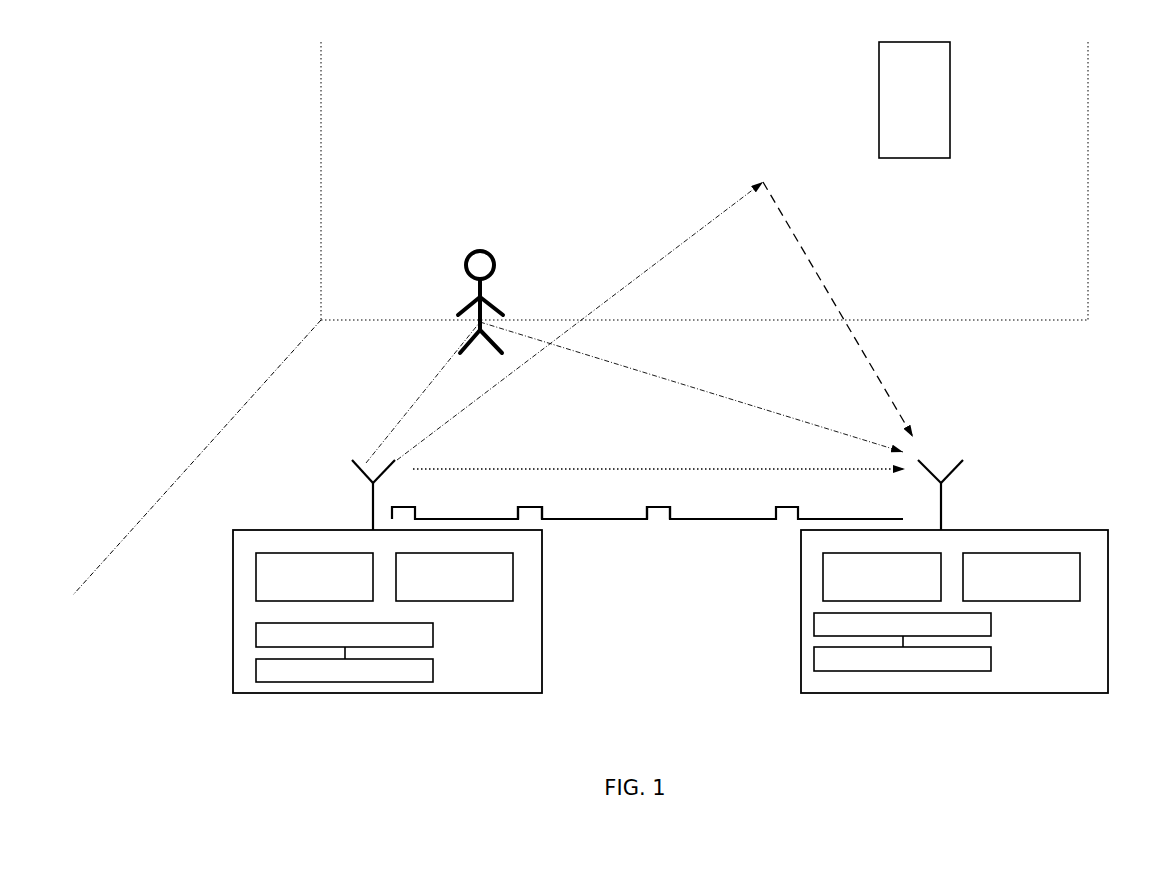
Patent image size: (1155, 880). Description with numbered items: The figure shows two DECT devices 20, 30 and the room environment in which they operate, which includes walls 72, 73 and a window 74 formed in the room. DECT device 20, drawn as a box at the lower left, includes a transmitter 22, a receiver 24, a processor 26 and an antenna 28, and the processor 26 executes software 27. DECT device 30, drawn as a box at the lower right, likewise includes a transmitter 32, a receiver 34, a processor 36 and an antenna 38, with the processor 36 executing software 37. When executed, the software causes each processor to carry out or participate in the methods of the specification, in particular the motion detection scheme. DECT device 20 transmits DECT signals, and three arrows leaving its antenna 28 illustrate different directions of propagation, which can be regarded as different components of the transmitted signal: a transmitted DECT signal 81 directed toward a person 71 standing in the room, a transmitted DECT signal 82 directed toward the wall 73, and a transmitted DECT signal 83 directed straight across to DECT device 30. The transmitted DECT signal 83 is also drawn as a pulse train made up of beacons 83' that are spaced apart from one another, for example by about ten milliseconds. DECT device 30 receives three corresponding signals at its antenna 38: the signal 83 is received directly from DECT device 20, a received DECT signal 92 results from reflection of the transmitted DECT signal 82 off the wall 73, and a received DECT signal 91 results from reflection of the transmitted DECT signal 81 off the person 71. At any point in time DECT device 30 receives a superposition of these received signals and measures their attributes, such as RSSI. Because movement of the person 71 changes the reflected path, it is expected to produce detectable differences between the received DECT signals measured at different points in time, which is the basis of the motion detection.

The DECT device 20 is at (447, 656).
The transmitter 22 is at (305, 598).
The receiver 24 is at (445, 598).
The processor 26 is at (400, 644).
The software 27 is at (394, 680).
The antenna 28 is at (357, 480).
The DECT device 30 is at (1016, 656).
The transmitter 32 is at (873, 598).
The receiver 34 is at (1012, 598).
The processor 36 is at (958, 634).
The software 37 is at (952, 669).
The antenna 38 is at (925, 473).
The person 71 is at (482, 245).
The wall 72 is at (177, 368).
The wall 73 is at (642, 150).
The window 74 is at (902, 110).
The transmitted DECT signal 81 is at (398, 420).
The transmitted DECT signal 82 is at (492, 390).
The transmitted DECT signal 83 is at (648, 494).
The beacons 83' is at (589, 501).
The received DECT signal 91 is at (782, 400).
The received DECT signal 92 is at (828, 293).